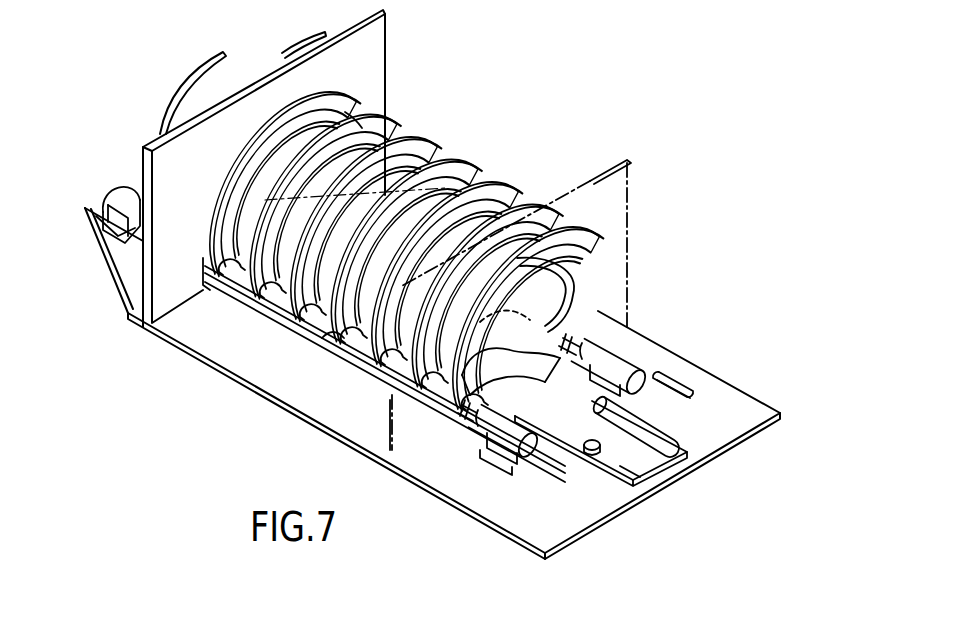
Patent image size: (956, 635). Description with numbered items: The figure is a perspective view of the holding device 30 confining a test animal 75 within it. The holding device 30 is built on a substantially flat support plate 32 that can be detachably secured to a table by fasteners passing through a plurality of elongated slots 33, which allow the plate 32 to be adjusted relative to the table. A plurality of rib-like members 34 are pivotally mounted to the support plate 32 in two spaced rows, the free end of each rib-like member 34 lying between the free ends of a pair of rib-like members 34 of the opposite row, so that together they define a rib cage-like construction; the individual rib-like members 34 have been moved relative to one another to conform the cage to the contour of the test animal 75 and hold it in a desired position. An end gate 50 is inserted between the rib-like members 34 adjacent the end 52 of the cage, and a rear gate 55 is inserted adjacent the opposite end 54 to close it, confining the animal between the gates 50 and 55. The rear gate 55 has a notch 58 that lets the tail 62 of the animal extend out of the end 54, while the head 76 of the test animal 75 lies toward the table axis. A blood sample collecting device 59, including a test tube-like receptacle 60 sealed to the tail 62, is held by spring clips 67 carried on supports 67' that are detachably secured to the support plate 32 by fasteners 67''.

The holding device 30 is at (222, 392).
The support plate 32 is at (743, 415).
The elongated slots 33 is at (683, 377).
The rib-like members 34 is at (450, 177).
The end gate 50 is at (367, 43).
The end of the rib cage-like construction 52 is at (130, 137).
The end of the rib cage-like construction 54 is at (598, 289).
The rear gate 55 is at (648, 177).
The notch 58 is at (498, 340).
The blood sample collecting device 59 is at (688, 422).
The test tube-like receptacle 60 is at (667, 443).
The tail 62 is at (590, 338).
The spring clips 67 is at (510, 453).
The supports 67' is at (614, 523).
The fasteners 67'' is at (566, 487).
The test animal 75 is at (333, 333).
The head 76 is at (353, 125).